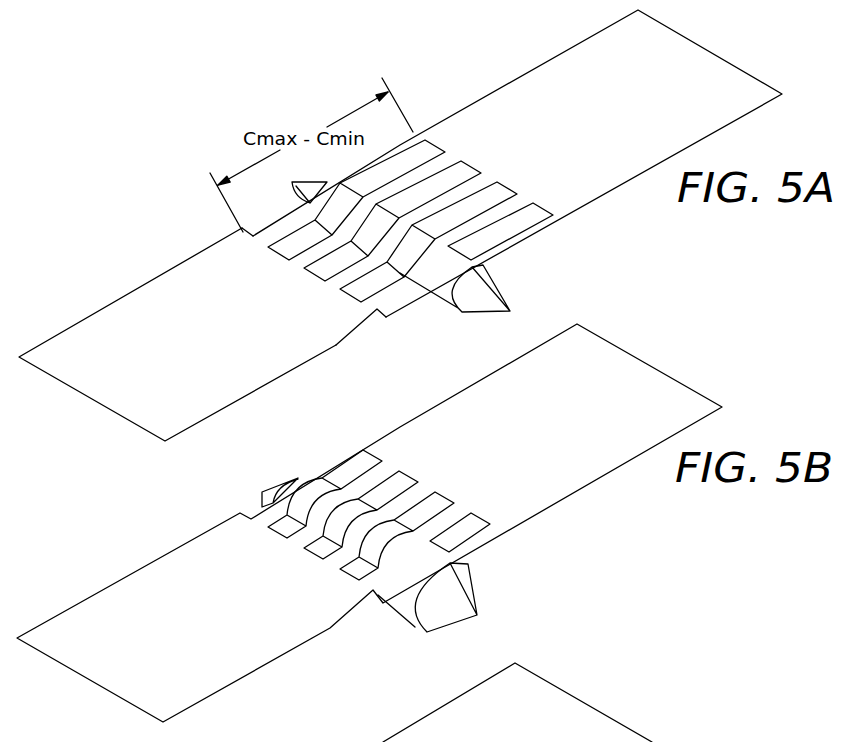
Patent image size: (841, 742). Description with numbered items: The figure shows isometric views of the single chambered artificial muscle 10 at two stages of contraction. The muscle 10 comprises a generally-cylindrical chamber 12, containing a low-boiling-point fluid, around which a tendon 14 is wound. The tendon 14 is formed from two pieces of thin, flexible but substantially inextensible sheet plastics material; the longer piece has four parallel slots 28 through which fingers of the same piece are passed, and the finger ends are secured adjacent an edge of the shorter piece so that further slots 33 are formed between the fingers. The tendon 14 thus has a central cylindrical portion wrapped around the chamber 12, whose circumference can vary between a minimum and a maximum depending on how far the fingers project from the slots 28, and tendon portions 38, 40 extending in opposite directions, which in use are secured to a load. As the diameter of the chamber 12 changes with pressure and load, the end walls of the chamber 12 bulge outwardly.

In FIG. 5A, the artificial muscle 10 is at (336, 187).
In FIG. 5B, the artificial muscle 10 is at (325, 541).
In FIG. 5A, the chamber 12 is at (515, 282).
In FIG. 5B, the chamber 12 is at (480, 588).
In FIG. 5A, the tendon 14 is at (400, 225).
In FIG. 5B, the tendon 14 is at (563, 513).
In FIG. 5A, the slots 28 is at (453, 178).
In FIG. 5A, the further slots 33 is at (300, 242).
In FIG. 5A, the tendon portion 38 is at (147, 317).
In FIG. 5A, the tendon portion 40 is at (704, 83).